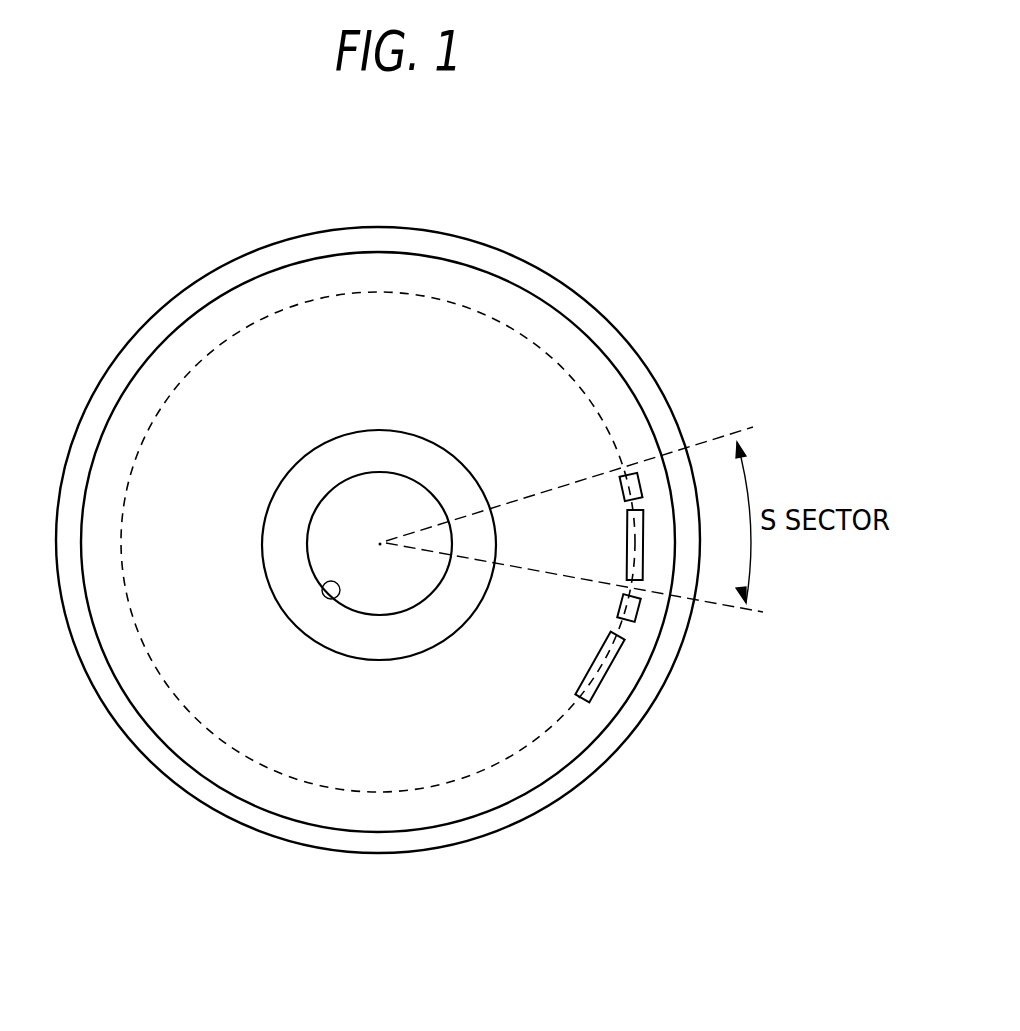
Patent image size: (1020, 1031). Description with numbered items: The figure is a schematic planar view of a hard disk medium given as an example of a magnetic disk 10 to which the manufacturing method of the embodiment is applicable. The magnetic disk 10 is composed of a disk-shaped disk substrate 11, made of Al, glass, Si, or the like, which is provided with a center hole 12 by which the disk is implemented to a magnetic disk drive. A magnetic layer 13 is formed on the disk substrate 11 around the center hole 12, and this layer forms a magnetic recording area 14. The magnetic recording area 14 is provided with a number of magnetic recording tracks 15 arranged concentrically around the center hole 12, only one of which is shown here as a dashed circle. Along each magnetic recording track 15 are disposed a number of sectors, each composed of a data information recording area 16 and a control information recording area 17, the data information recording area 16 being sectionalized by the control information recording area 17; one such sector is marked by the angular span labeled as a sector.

The magnetic disk 10 is at (180, 226).
The disk substrate 11 is at (496, 247).
The center hole 12 is at (340, 600).
The magnetic layer 13 is at (415, 823).
The magnetic recording area 14 is at (498, 740).
The magnetic recording track 15 is at (558, 722).
The data information recording area 16 is at (643, 537).
The control information recording area 17 is at (640, 480).